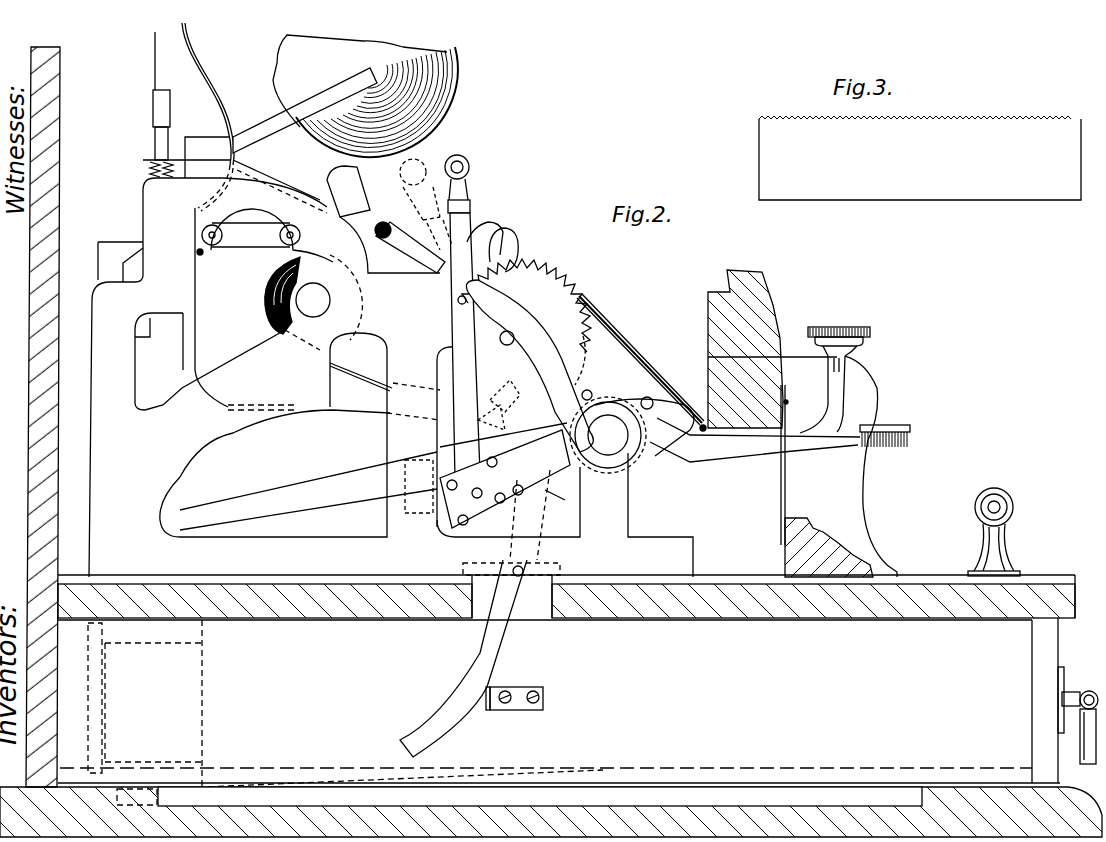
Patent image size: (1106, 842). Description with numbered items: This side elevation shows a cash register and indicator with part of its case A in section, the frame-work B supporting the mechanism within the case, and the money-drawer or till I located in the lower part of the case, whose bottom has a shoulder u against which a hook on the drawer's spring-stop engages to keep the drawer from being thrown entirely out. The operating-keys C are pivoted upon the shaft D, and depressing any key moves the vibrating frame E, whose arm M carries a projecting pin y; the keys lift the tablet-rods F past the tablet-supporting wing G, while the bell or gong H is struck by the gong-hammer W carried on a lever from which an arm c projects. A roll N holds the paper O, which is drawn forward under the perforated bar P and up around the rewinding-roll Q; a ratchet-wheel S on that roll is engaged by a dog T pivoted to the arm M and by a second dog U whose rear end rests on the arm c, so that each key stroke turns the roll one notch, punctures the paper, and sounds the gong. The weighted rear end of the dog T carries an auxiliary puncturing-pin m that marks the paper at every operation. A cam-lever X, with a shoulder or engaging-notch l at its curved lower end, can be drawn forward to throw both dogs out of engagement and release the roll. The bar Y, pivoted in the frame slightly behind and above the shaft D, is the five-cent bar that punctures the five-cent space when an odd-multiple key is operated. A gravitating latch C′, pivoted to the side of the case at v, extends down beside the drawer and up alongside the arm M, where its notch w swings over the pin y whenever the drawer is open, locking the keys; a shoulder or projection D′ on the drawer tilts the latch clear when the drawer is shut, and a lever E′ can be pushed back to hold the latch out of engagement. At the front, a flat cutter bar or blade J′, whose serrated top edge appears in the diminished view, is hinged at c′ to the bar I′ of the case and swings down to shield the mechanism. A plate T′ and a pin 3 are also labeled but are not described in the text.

In FIG. 2, the case A is at (30, 417).
In FIG. 2, the frame-work B is at (391, 357).
In FIG. 2, the operating-keys C is at (780, 442).
In FIG. 2, the gravitating latch C′ is at (476, 658).
In FIG. 2, the shaft D is at (632, 431).
In FIG. 2, the shoulder or projection D′ is at (514, 687).
In FIG. 2, the vibrating frame E is at (491, 420).
In FIG. 2, the lever E′ is at (485, 232).
In FIG. 2, the tablet-rods F is at (179, 104).
In FIG. 2, the tablet-supporting wing G is at (120, 252).
In FIG. 2, the bell or gong H is at (365, 96).
In FIG. 2, the money-drawer or till I is at (559, 700).
In FIG. 2, the bar of the case I′ is at (713, 378).
In FIG. 2, the cutter bar or blade J′ is at (640, 359).
In FIG. 3, the cutter bar or blade J′ is at (920, 158).
In FIG. 2, the arm of the vibrating frame M is at (503, 445).
In FIG. 2, the roll N is at (297, 303).
In FIG. 2, the paper O is at (361, 379).
In FIG. 2, the perforated bar P is at (413, 392).
In FIG. 2, the rewinding-roll Q is at (640, 345).
In FIG. 2, the ratchet-wheel S is at (549, 284).
In FIG. 2, the dog T is at (505, 397).
In FIG. 2, the plate T′ is at (440, 508).
In FIG. 2, the dog U is at (511, 245).
In FIG. 2, the gong-hammer W is at (305, 142).
In FIG. 2, the cam-lever X is at (410, 247).
In FIG. 2, the bar Y is at (529, 366).
In FIG. 2, the arm c is at (265, 214).
In FIG. 2, the hinge c′ is at (699, 429).
In FIG. 2, the shoulder or engaging-notch l is at (581, 360).
In FIG. 2, the auxiliary puncturing-pin m is at (430, 458).
In FIG. 2, the shoulder u is at (540, 797).
In FIG. 2, the pivot v is at (511, 560).
In FIG. 2, the notch w is at (559, 500).
In FIG. 2, the projecting pin y is at (524, 515).
In FIG. 2, the pin 3 is at (457, 301).